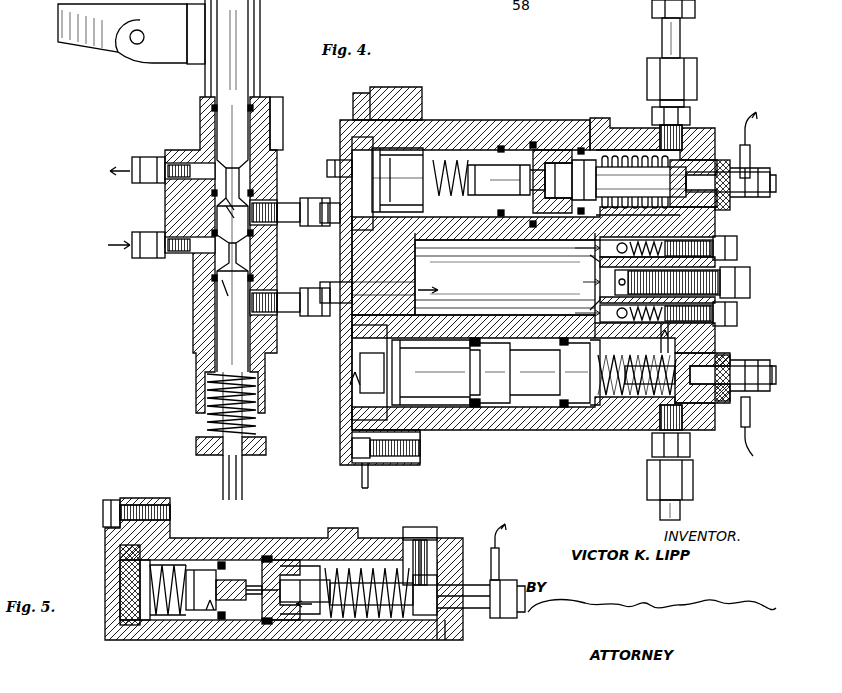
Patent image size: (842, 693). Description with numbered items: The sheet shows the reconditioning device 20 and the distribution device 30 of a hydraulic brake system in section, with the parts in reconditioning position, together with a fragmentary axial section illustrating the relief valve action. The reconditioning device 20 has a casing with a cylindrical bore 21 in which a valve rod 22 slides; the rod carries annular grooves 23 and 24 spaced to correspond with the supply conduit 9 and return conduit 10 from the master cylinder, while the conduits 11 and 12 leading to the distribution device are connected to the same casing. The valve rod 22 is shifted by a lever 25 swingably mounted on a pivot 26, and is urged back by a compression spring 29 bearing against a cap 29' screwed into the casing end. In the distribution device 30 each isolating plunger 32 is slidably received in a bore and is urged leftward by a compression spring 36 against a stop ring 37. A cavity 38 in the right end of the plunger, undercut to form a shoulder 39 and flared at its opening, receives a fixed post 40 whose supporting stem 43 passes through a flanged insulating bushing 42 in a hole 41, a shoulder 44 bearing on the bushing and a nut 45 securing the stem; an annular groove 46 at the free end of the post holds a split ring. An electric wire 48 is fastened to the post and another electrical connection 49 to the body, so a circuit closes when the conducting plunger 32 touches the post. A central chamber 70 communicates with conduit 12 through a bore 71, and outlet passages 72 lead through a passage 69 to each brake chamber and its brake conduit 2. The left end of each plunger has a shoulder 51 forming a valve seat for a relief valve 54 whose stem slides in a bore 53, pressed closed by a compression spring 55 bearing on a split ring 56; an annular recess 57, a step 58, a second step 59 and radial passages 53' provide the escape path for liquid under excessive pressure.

In FIG. 4, the brake conduit 2 is at (662, 42).
In FIG. 5, the brake conduit 2 is at (418, 528).
In FIG. 4, the supply conduit 9 is at (137, 240).
In FIG. 4, the return conduit 10 is at (137, 158).
In FIG. 4, the conduit 11 is at (294, 203).
In FIG. 4, the conduit 12 is at (295, 310).
In FIG. 4, the reconditioning device 20 is at (194, 328).
In FIG. 4, the cylindrical bore 21 is at (258, 268).
In FIG. 4, the valve rod 22 is at (232, 112).
In FIG. 4, the annular groove 23 is at (226, 206).
In FIG. 4, the annular groove 24 is at (222, 280).
In FIG. 4, the lever 25 is at (80, 30).
In FIG. 4, the pivot 26 is at (137, 44).
In FIG. 4, the compression spring 29 is at (206, 404).
In FIG. 4, the cap 29' is at (209, 463).
In FIG. 4, the distribution device 30 is at (512, 128).
In FIG. 5, the distribution device 30 is at (258, 556).
In FIG. 4, the isolating piston or plunger 32 is at (476, 372).
In FIG. 5, the isolating piston or plunger 32 is at (172, 580).
In FIG. 4, the compression spring 36 is at (632, 398).
In FIG. 5, the compression spring 36 is at (356, 576).
In FIG. 4, the ring 37 is at (355, 375).
In FIG. 4, the cavity 38 is at (556, 172).
In FIG. 5, the cavity 38 is at (290, 584).
In FIG. 5, the shoulder 39 is at (293, 606).
In FIG. 4, the fixed post 40 is at (620, 174).
In FIG. 4, the hole 41 is at (712, 142).
In FIG. 4, the flanged insulating bushing 42 is at (686, 202).
In FIG. 4, the supporting stem portion 43 is at (720, 352).
In FIG. 4, the shoulder 44 is at (690, 212).
In FIG. 4, the nut 45 is at (733, 402).
In FIG. 4, the annular groove 46 is at (580, 168).
In FIG. 4, the electric wire 48 is at (752, 140).
In FIG. 4, the electrical connection 49 is at (362, 468).
In FIG. 5, the shoulder 51 is at (198, 565).
In FIG. 5, the bore 53 is at (272, 566).
In FIG. 4, the passage 53' is at (508, 141).
In FIG. 5, the passage 53' is at (264, 609).
In FIG. 4, the relief valve 54 is at (490, 178).
In FIG. 5, the relief valve 54 is at (212, 612).
In FIG. 4, the compression spring 55 is at (563, 250).
In FIG. 5, the compression spring 55 is at (175, 602).
In FIG. 5, the split ring 56 is at (140, 606).
In FIG. 5, the annular recess 57 is at (232, 580).
In FIG. 4, the step 58 is at (518, 402).
In FIG. 4, the second step 59 is at (556, 396).
In FIG. 4, the passage 69 is at (672, 338).
In FIG. 5, the passage 69 is at (437, 632).
In FIG. 4, the chamber 70 is at (505, 277).
In FIG. 4, the bore 71 is at (430, 293).
In FIG. 4, the outlet passage 72 is at (598, 310).